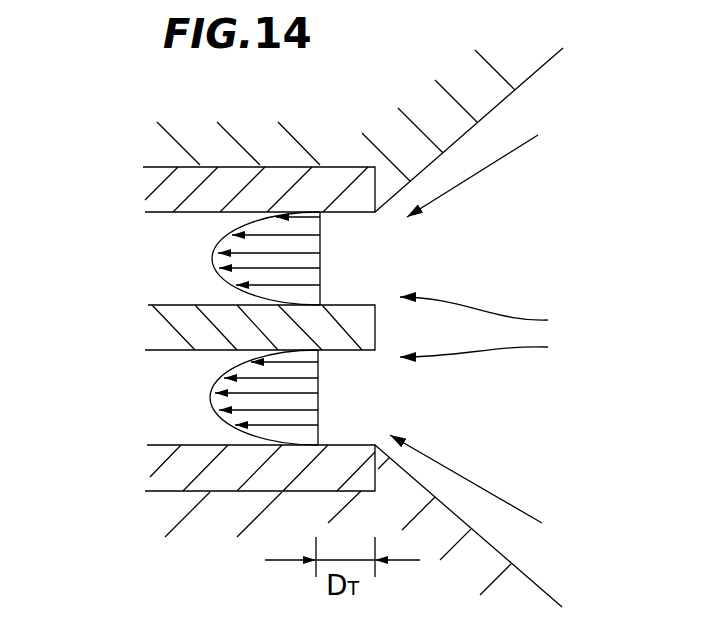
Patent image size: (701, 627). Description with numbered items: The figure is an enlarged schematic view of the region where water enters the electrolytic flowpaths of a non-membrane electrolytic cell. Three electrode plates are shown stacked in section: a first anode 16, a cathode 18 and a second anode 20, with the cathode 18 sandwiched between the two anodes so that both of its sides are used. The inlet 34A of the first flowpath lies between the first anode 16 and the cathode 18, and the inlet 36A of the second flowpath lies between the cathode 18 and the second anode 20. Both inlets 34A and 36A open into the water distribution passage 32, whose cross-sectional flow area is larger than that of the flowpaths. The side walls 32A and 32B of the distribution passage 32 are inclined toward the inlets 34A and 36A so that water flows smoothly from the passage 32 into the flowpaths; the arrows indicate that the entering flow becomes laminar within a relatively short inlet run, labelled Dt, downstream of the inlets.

The first anode 16 is at (166, 468).
The cathode 18 is at (167, 328).
The second anode 20 is at (162, 187).
The water distribution passage 32 is at (562, 268).
The side wall of the distribution path 32A is at (503, 557).
The side wall of the distribution path 32B is at (510, 93).
The inlet of the first flowpath 34A is at (173, 415).
The inlet of the second flowpath 36A is at (162, 277).